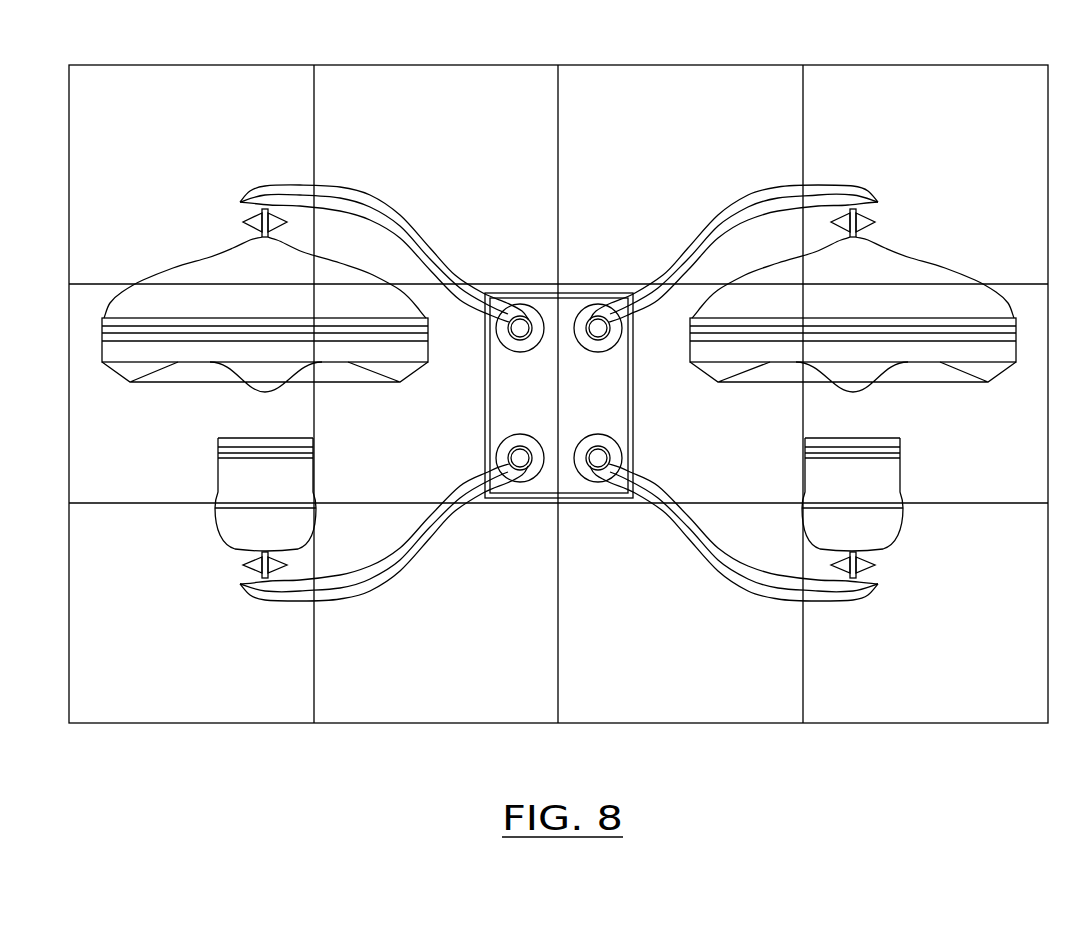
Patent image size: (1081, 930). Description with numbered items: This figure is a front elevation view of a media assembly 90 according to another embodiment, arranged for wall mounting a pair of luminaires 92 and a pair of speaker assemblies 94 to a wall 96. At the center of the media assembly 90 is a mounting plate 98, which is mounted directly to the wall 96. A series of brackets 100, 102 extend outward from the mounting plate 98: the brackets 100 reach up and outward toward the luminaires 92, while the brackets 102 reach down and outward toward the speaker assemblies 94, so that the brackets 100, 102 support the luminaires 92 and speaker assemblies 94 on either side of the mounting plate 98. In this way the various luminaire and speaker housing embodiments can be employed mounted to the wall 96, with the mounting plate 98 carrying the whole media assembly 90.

The media assembly 90 is at (652, 142).
The luminaire 92 is at (145, 280).
The speaker assembly 94 is at (217, 468).
The wall 96 is at (197, 158).
The mounting plate 98 is at (545, 292).
The bracket 100 is at (338, 184).
The bracket 102 is at (287, 605).